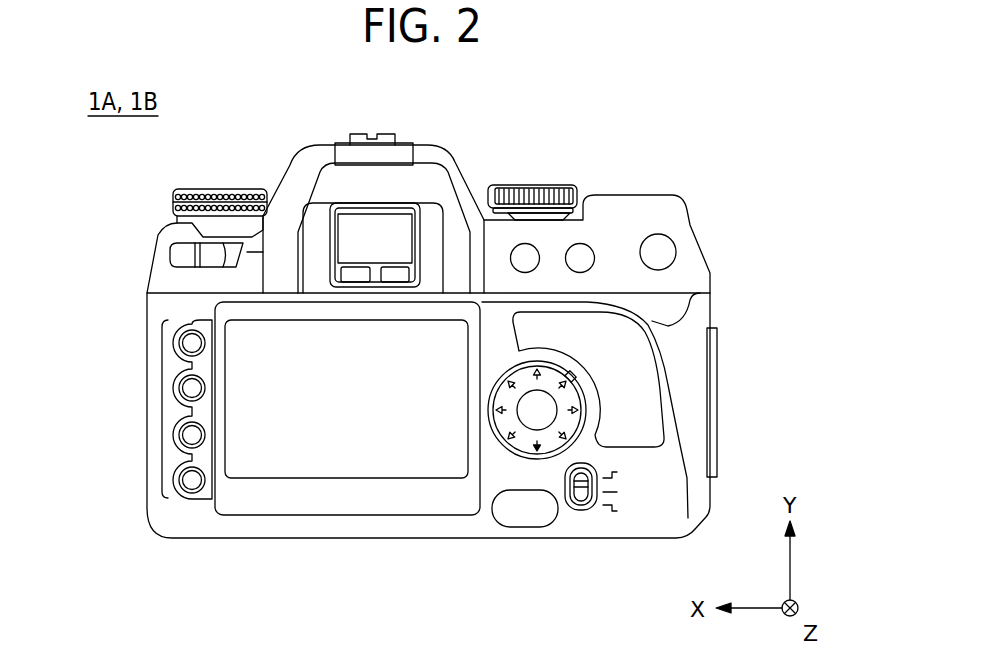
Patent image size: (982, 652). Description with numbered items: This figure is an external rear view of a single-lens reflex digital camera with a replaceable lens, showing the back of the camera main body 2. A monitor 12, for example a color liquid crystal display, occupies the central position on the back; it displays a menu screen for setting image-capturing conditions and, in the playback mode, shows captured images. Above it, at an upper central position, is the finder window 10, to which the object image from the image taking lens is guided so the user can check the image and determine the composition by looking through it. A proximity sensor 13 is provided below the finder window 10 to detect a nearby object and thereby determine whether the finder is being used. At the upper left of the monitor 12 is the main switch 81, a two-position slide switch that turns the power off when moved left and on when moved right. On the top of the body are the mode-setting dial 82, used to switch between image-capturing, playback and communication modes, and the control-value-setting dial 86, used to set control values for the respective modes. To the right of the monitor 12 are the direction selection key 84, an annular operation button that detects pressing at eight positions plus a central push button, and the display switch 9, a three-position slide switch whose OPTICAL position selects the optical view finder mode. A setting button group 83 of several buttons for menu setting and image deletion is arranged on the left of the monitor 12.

The camera main body 2 is at (703, 300).
The display switch 9 is at (583, 497).
The finder window 10 is at (382, 230).
The monitor 12 is at (312, 452).
The proximity sensor 13 is at (388, 263).
The main switch 81 is at (172, 258).
The mode-setting dial 82 is at (533, 185).
The setting button group 83 is at (162, 408).
The direction selection key 84 is at (518, 457).
The control-value-setting dial 86 is at (222, 189).